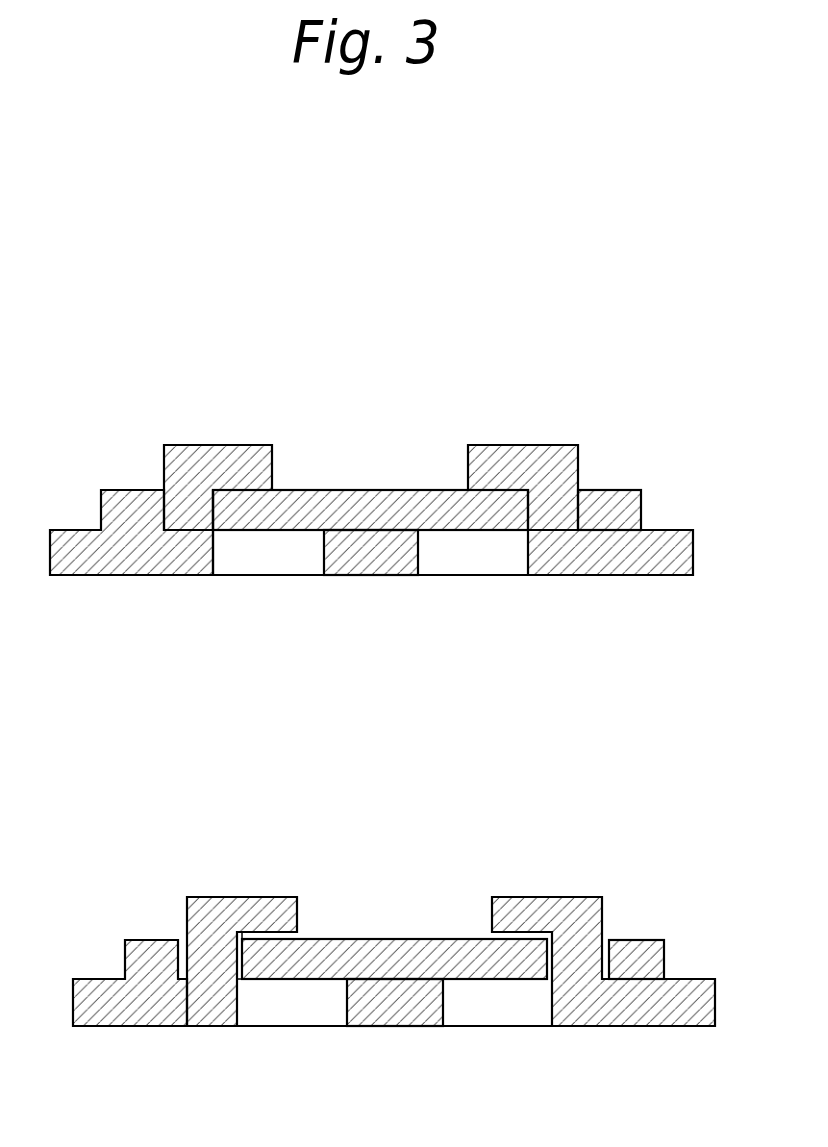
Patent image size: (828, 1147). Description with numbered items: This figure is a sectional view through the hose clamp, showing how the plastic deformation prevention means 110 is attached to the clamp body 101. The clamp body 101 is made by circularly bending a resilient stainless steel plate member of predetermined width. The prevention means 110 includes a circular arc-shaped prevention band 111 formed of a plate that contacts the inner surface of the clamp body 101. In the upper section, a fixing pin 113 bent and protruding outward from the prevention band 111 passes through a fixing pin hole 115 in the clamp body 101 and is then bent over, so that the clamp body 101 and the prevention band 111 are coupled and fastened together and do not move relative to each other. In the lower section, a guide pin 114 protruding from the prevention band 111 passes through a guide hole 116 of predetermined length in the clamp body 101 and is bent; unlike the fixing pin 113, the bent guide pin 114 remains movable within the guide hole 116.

The plastic deformation prevention means 110 is at (490, 586).
The clamp body 101 is at (396, 498).
The fixing pins 113 is at (228, 457).
The fixing pin holes 115 is at (215, 507).
The prevention band 111 is at (376, 555).
The guide pins 114 is at (262, 912).
The guide holes 116 is at (242, 960).